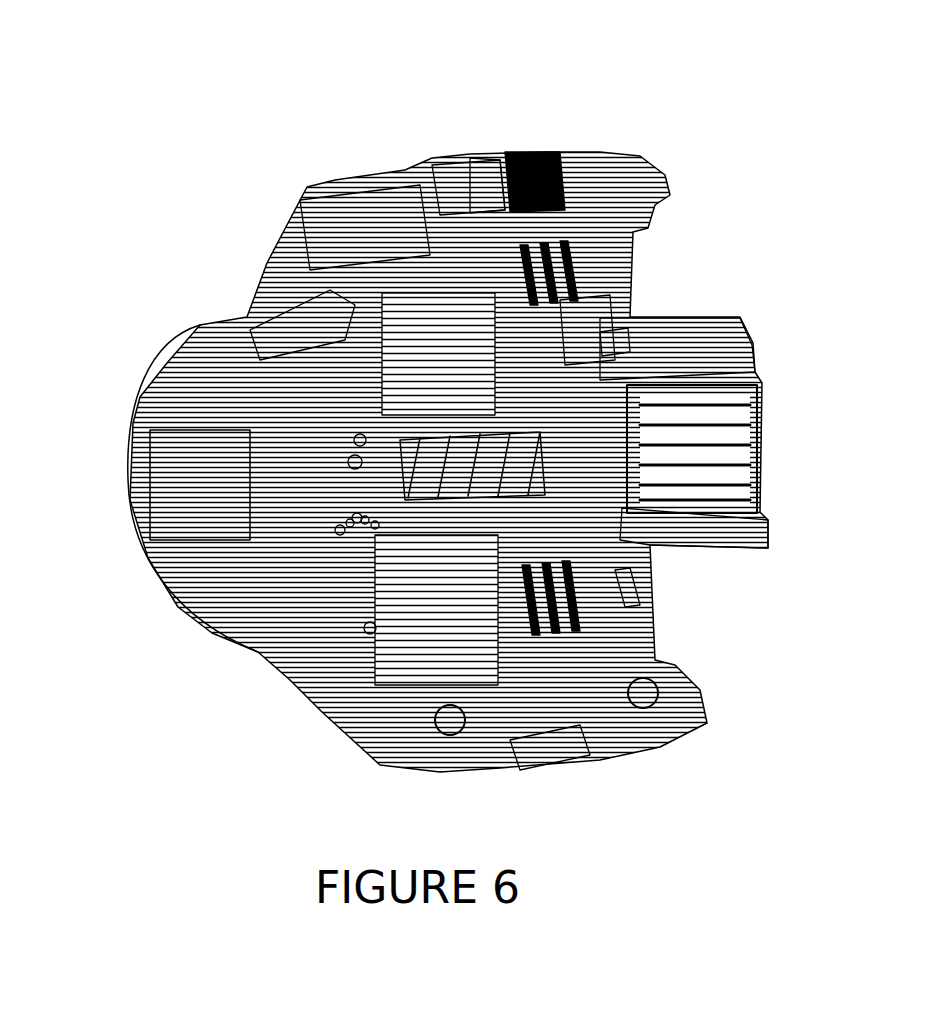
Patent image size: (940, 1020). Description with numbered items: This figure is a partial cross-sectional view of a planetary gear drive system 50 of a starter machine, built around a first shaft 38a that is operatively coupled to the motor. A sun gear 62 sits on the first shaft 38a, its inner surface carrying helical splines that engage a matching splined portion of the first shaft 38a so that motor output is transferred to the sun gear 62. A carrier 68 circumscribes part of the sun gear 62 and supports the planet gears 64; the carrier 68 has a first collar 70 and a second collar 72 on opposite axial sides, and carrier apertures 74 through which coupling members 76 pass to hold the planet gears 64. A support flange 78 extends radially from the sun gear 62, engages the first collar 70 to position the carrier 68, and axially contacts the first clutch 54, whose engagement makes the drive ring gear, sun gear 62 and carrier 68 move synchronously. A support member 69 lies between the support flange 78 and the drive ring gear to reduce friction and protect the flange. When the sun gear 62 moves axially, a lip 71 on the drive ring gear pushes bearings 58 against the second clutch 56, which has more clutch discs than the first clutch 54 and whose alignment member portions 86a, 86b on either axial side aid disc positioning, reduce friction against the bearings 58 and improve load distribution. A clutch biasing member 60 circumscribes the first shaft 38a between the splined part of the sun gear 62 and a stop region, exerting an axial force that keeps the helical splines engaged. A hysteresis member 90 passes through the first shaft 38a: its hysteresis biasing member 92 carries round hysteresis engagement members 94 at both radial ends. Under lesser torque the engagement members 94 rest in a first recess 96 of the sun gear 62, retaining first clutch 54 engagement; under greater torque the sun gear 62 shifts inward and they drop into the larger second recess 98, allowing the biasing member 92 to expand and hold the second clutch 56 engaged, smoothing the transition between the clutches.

The first shaft 38a is at (605, 516).
The planetary gear drive system 50 is at (685, 128).
The first clutch 54 is at (540, 302).
The second clutch 56 is at (432, 165).
The bearings 58 is at (438, 760).
The clutch biasing member 60 is at (520, 477).
The sun gear 62 is at (540, 478).
The planet gears 64 is at (405, 338).
The carrier 68 is at (310, 305).
The support member 69 is at (605, 338).
The first collar 70 is at (580, 375).
The housing flange 71 is at (333, 247).
The second collar 72 is at (150, 510).
The carrier apertures 74 is at (368, 648).
The coupling members 76 is at (375, 525).
The support flange 78 is at (575, 332).
The first portion of alignment member 86a is at (532, 165).
The second portion of alignment member 86b is at (438, 190).
The hysteresis member 90 is at (333, 466).
The hysteresis biasing member 92 is at (338, 530).
The hysteresis engagement members 94 is at (360, 440).
The first recess 96 is at (365, 520).
The second recess 98 is at (350, 523).